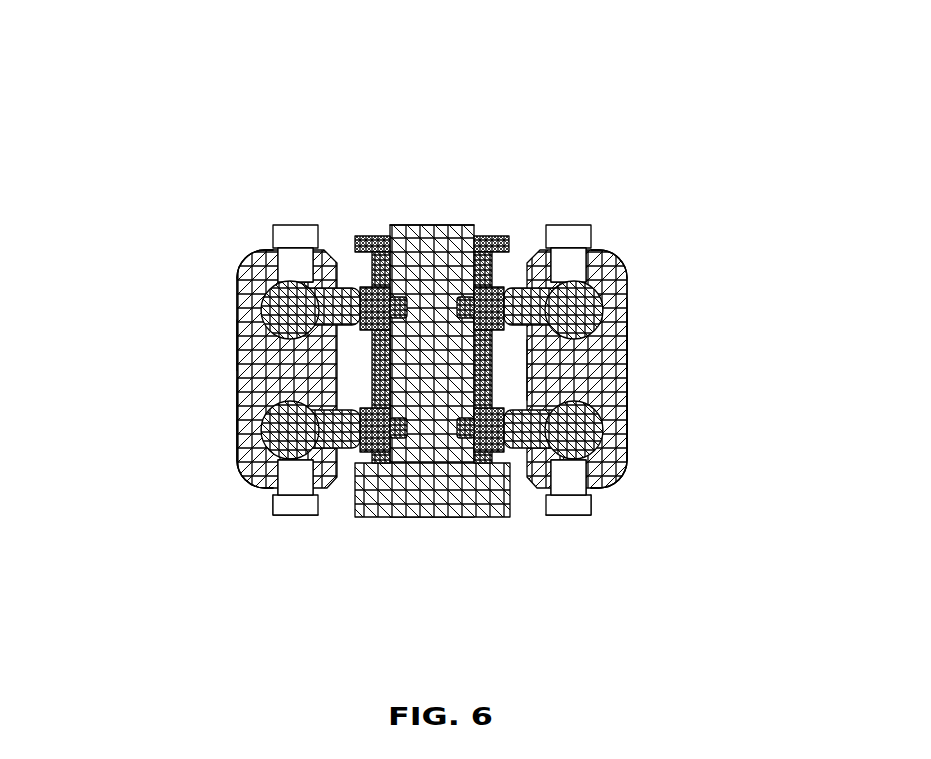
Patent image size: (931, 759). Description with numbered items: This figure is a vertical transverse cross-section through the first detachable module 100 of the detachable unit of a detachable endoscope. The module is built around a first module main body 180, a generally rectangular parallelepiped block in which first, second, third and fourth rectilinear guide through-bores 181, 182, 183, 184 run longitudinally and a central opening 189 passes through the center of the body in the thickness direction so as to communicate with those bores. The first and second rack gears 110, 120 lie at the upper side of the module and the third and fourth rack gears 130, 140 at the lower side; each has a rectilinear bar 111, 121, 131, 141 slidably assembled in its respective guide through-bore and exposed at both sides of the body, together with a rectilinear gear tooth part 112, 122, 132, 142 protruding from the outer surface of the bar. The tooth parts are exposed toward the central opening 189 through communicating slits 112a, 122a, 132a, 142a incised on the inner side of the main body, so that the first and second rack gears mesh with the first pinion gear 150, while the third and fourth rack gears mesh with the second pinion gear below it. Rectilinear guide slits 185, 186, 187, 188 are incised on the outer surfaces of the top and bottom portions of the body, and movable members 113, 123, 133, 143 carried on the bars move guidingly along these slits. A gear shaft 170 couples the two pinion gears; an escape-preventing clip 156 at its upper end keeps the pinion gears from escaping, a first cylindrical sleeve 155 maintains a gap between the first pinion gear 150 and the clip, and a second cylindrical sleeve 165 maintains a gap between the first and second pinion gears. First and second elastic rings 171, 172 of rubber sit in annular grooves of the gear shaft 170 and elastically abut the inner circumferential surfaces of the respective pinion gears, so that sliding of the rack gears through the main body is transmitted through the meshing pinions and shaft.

The first detachable module 100 is at (423, 137).
The first rack gear 110 is at (130, 300).
The rectilinear bar 111 is at (240, 283).
The rectilinear gear tooth part 112 is at (275, 300).
The communicating slit 112a is at (300, 262).
The movable member 113 is at (298, 222).
The second rack gear 120 is at (735, 300).
The rectilinear bar 121 is at (624, 283).
The rectilinear gear tooth part 122 is at (589, 300).
The communicating slit 122a is at (565, 262).
The movable member 123 is at (565, 227).
The third rack gear 130 is at (153, 477).
The rectilinear bar 131 is at (238, 445).
The rectilinear gear tooth part 132 is at (280, 470).
The communicating slit 132a is at (318, 482).
The movable member 133 is at (276, 500).
The fourth rack gear 140 is at (730, 478).
The rectilinear bar 141 is at (626, 447).
The rectilinear gear tooth part 142 is at (584, 470).
The communicating slit 142a is at (548, 482).
The movable member 143 is at (588, 500).
The first pinion gear 150 is at (378, 258).
The first cylindrical sleeve 155 is at (492, 262).
The escape-preventing clip 156 is at (493, 237).
The second cylindrical sleeve 165 is at (423, 500).
The gear shaft 170 is at (435, 228).
The first elastic ring 171 is at (432, 285).
The second elastic ring 172 is at (430, 410).
The first module main body 180 is at (632, 388).
The first rectilinear guide through-bore 181 is at (280, 347).
The second rectilinear guide through-bore 182 is at (584, 347).
The third rectilinear guide through-bore 183 is at (270, 410).
The fourth rectilinear guide through-bore 184 is at (594, 410).
The rectilinear guide slit 185 is at (270, 246).
The rectilinear guide slit 186 is at (594, 246).
The rectilinear guide slit 187 is at (303, 515).
The rectilinear guide slit 188 is at (553, 515).
The central opening 189 is at (534, 372).